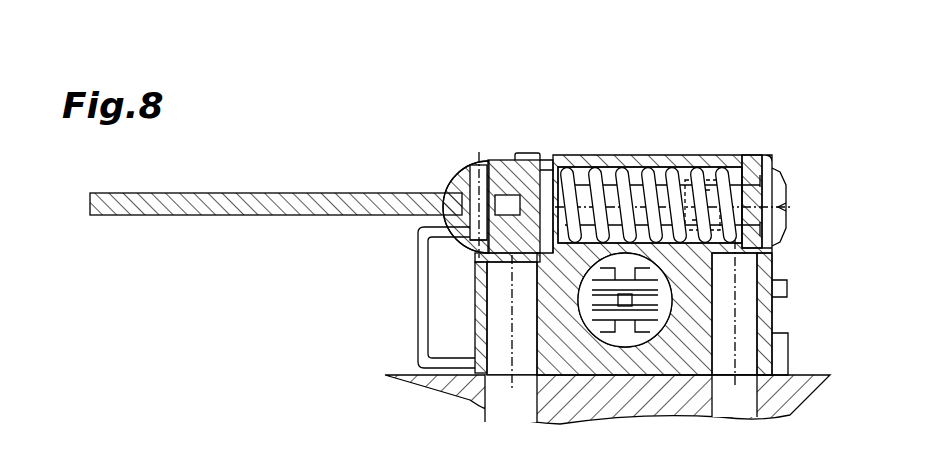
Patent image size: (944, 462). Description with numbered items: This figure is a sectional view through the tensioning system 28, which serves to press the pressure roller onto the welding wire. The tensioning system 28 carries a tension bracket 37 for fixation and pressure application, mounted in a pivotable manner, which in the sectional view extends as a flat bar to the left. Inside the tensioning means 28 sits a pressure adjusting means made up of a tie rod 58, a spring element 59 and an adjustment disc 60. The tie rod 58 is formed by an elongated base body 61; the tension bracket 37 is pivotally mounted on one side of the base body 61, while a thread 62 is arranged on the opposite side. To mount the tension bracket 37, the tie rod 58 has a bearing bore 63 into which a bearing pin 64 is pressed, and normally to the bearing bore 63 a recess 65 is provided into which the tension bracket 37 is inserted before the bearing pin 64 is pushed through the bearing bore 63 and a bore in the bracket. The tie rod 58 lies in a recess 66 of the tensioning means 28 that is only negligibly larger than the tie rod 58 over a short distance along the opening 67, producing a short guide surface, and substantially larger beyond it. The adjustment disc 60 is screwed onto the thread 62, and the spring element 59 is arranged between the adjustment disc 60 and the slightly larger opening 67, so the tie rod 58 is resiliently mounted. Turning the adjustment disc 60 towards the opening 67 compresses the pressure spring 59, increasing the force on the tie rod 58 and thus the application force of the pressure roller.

The tensioning system 28 is at (300, 130).
The tension bracket 37 is at (162, 203).
The tie rod 58 is at (501, 150).
The spring element 59 is at (667, 170).
The adjustment disc 60 is at (762, 160).
The base body 61 is at (583, 162).
The thread 62 is at (653, 170).
The bearing bore 63 is at (487, 243).
The bearing pin 64 is at (470, 165).
The recess 65 is at (477, 158).
The recess 66 is at (712, 152).
The opening 67 is at (545, 157).